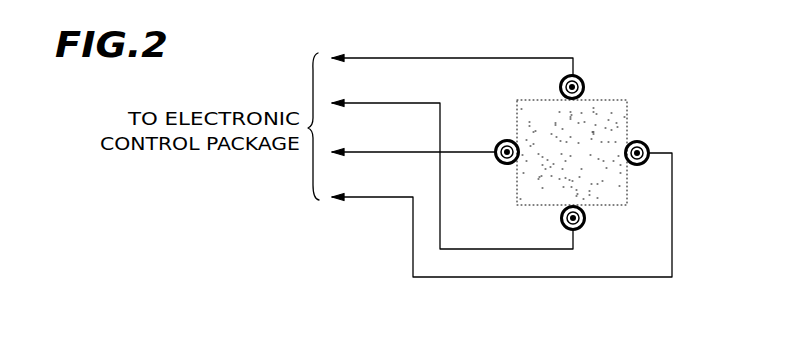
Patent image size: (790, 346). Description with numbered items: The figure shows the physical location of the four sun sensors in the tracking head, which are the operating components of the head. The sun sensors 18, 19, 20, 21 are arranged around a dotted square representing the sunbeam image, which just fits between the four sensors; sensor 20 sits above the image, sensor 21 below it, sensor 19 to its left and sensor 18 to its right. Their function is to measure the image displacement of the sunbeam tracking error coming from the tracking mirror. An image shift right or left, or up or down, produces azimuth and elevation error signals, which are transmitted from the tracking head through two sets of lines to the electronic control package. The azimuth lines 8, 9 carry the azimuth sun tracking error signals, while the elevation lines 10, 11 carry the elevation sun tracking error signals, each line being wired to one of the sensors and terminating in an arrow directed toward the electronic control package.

The azimuth line 8 is at (378, 152).
The azimuth line 9 is at (375, 197).
The elevation line 10 is at (378, 58).
The elevation line 11 is at (378, 103).
The sun sensor 18 is at (646, 144).
The sun sensor 19 is at (498, 161).
The sun sensor 20 is at (581, 79).
The sun sensor 21 is at (582, 227).